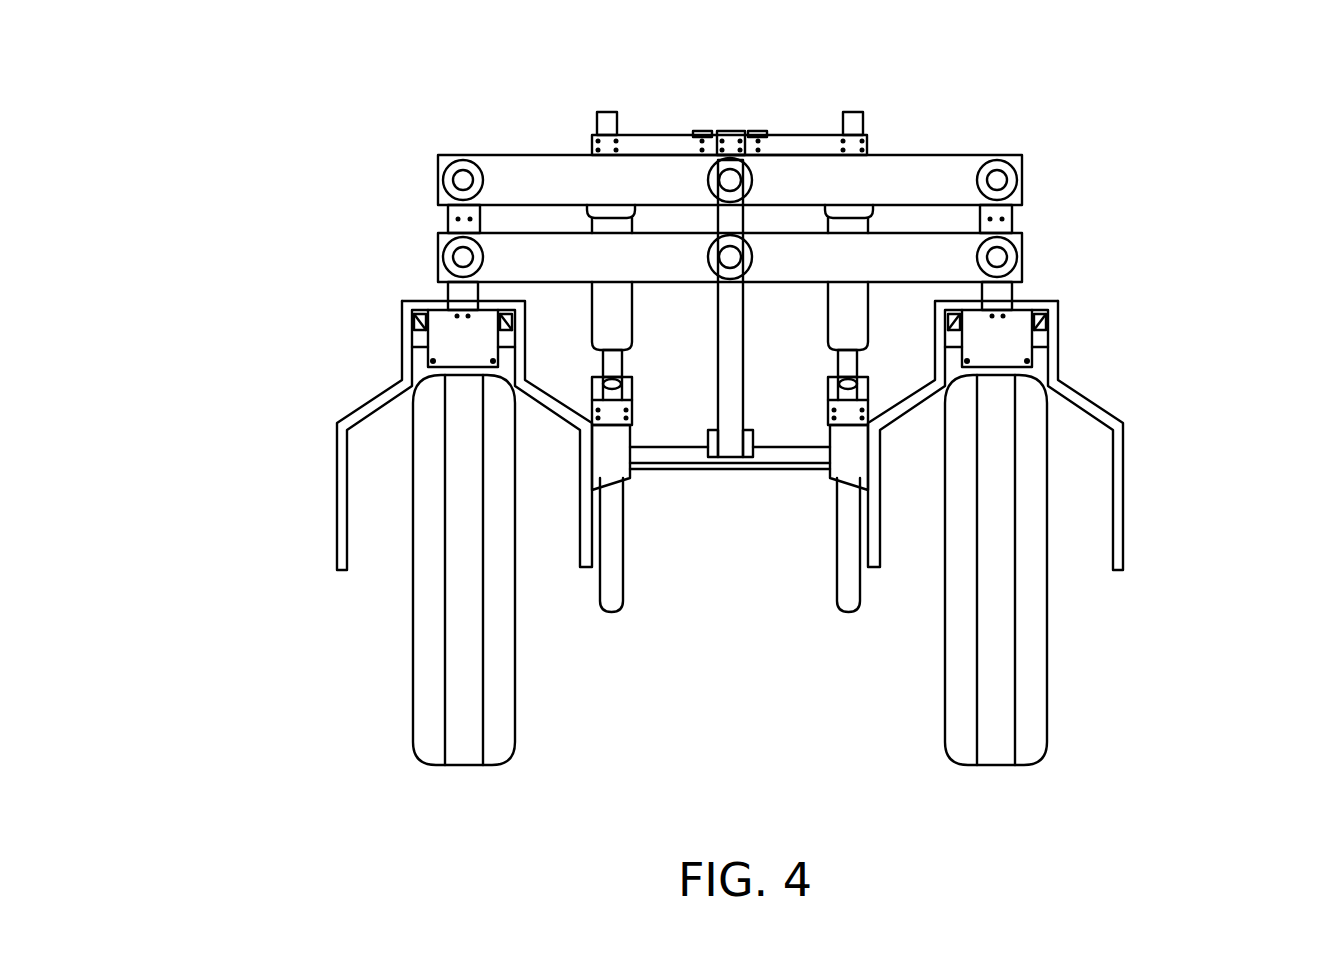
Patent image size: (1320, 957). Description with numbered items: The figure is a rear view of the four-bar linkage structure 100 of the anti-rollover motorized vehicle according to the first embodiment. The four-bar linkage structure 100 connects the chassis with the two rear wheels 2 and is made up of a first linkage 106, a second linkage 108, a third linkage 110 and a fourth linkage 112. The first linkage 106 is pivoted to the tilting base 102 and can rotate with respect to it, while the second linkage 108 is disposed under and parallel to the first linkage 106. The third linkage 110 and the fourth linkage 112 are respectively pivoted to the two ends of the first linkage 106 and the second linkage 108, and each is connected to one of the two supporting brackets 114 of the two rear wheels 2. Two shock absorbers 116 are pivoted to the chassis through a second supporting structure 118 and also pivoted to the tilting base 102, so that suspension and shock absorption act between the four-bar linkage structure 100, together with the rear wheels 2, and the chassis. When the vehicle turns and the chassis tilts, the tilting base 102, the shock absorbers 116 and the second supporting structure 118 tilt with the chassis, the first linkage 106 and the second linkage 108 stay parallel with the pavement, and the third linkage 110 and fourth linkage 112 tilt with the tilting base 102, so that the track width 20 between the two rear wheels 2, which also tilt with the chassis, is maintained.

The four-bar linkage structure 100 is at (237, 96).
The tilting base 102 is at (670, 133).
The first linkage 106 is at (537, 188).
The second linkage 108 is at (922, 260).
The third linkage 110 is at (1013, 215).
The fourth linkage 112 is at (445, 217).
The supporting brackets 114 is at (337, 452).
The shock absorbers 116 is at (730, 378).
The second supporting structure 118 is at (730, 577).
The rear wheels 2 is at (413, 577).
The track width 20 is at (477, 763).